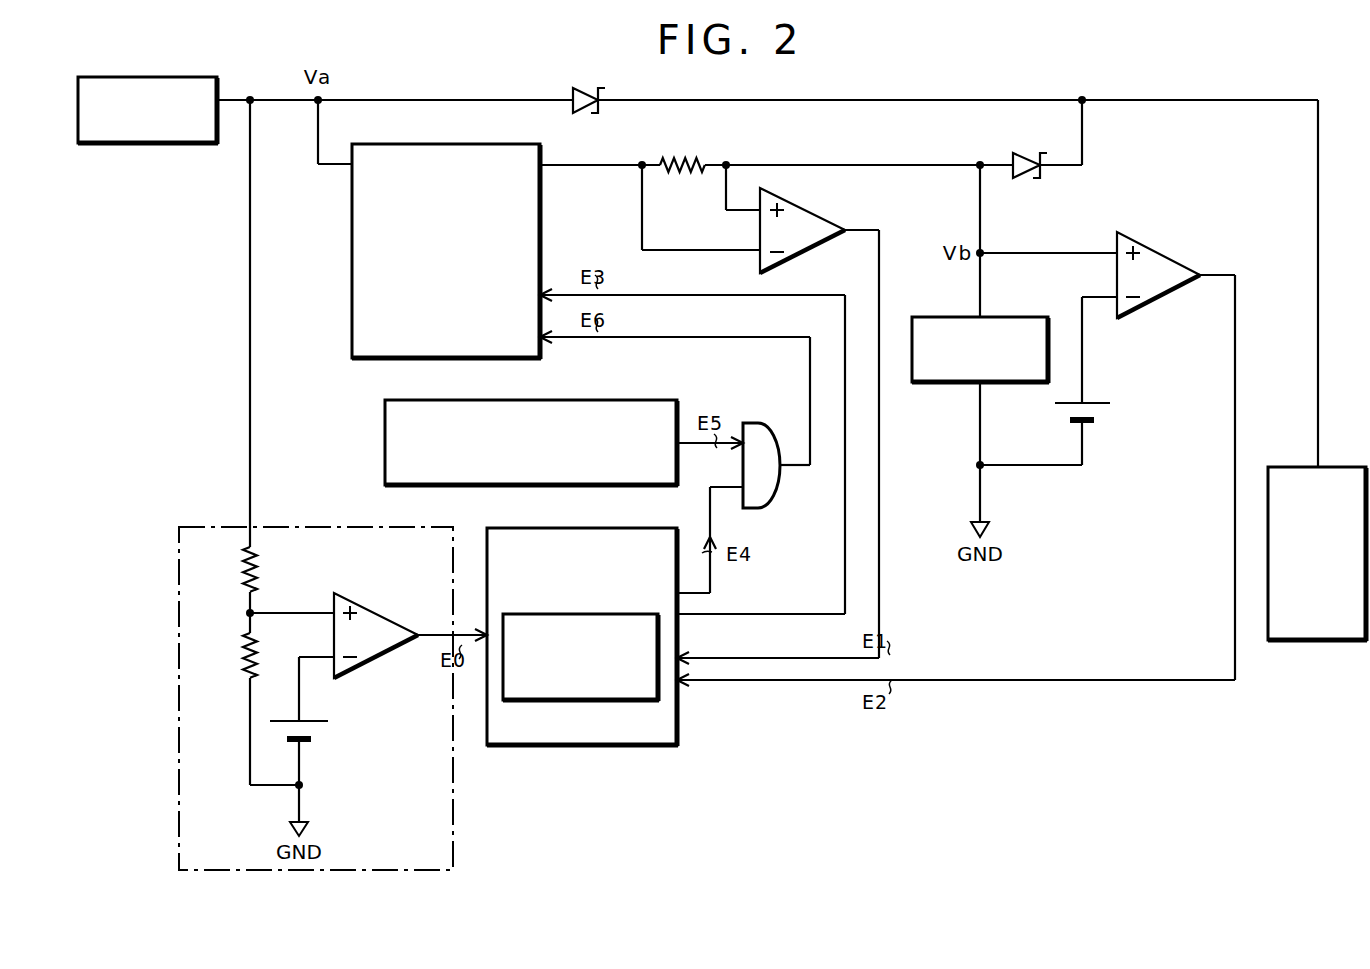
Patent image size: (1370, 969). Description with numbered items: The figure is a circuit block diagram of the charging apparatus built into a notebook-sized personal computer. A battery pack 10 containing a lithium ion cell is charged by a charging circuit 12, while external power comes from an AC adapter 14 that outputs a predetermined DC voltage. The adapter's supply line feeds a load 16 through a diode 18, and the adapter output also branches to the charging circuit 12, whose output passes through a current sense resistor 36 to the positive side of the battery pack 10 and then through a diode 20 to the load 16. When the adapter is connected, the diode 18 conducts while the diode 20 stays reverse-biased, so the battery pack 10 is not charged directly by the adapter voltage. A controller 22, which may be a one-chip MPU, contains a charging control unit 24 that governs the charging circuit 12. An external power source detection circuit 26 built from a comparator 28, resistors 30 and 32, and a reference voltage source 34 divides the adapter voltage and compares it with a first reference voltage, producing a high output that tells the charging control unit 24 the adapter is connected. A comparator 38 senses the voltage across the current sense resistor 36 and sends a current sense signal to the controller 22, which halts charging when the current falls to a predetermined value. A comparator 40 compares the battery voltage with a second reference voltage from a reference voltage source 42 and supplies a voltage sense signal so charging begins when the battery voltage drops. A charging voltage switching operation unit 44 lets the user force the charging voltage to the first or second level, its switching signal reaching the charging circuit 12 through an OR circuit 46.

The battery pack 10 is at (938, 318).
The charging circuit 12 is at (448, 145).
The AC adapter 14 is at (148, 78).
The load 16 is at (1316, 643).
The diode 18 is at (588, 85).
The diode 20 is at (1028, 152).
The controller 22 is at (582, 529).
The charging control unit 24 is at (582, 702).
The external power source detection circuit 26 is at (517, 698).
The comparator 28 is at (395, 620).
The resistor 30 is at (242, 571).
The resistor 32 is at (242, 657).
The reference voltage source 34 is at (315, 732).
The current sense resistor 36 is at (684, 151).
The comparator 38 is at (820, 215).
The comparator 40 is at (1176, 260).
The reference voltage source 42 is at (1100, 415).
The charging voltage switching operation unit 44 is at (385, 420).
The OR circuit 46 is at (755, 422).